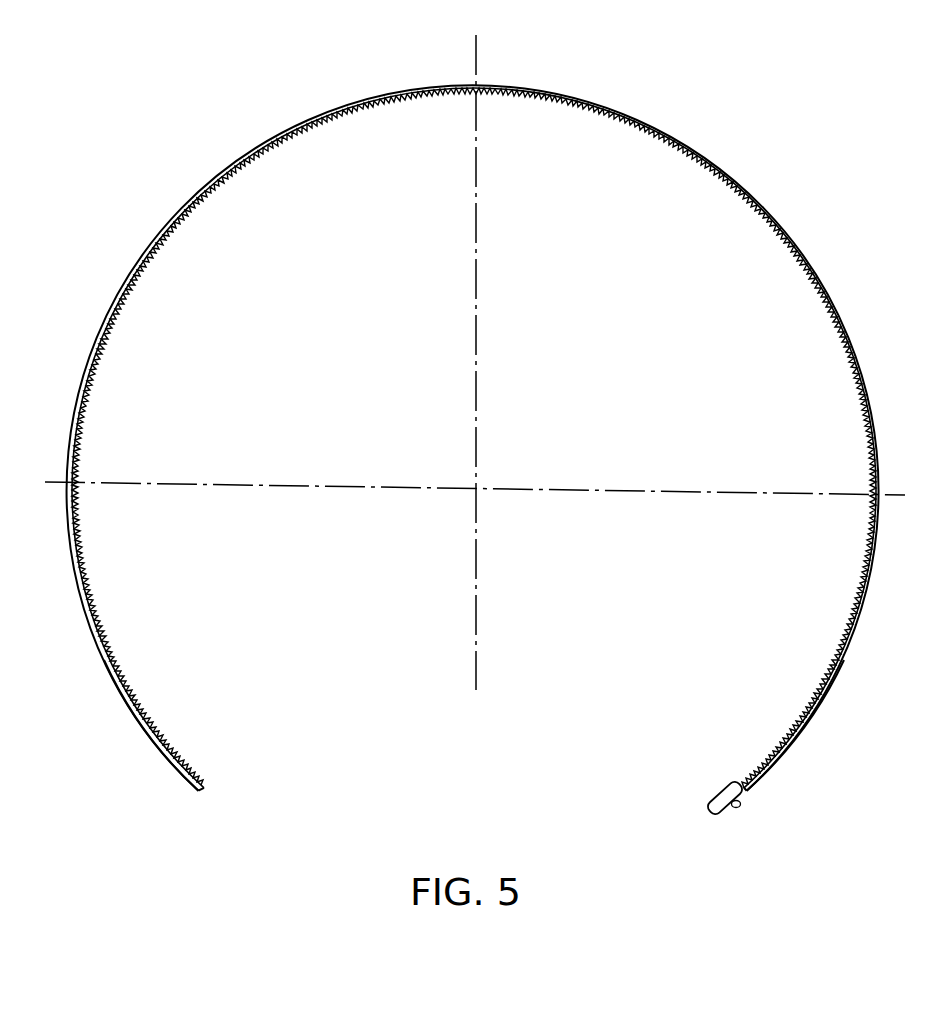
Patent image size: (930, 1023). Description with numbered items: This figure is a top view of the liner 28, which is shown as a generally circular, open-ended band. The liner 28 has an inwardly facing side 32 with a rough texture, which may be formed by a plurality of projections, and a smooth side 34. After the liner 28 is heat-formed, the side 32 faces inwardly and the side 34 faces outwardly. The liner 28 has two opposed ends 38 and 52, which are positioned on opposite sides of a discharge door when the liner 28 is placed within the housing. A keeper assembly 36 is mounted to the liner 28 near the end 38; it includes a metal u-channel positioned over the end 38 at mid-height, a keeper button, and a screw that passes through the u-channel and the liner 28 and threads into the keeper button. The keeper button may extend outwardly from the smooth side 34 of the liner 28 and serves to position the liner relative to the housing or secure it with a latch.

The liner 28 is at (249, 37).
The inwardly facing side 32 is at (250, 163).
The side 34 is at (752, 201).
The keeper assembly 36 is at (748, 793).
The end 38 is at (807, 702).
The end 52 is at (146, 707).